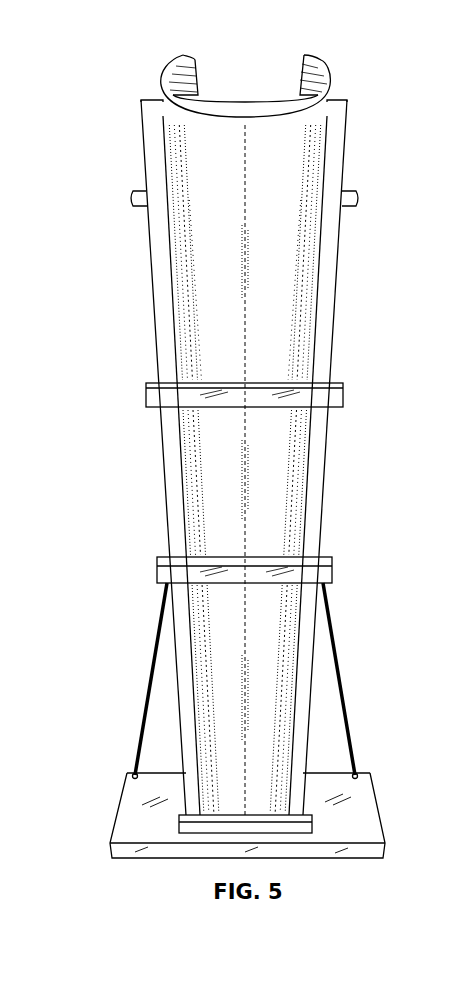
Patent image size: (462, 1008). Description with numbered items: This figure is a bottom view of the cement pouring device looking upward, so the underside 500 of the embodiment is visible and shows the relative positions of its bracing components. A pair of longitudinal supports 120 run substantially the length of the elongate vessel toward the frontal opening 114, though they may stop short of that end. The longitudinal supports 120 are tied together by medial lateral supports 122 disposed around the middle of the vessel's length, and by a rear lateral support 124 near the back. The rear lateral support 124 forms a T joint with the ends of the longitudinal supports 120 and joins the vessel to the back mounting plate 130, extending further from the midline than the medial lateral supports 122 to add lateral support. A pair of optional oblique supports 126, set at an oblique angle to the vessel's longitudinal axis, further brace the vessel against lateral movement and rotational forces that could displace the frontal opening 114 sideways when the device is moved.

The frontal opening 114 is at (245, 88).
The underside 500 is at (230, 159).
The longitudinal supports 120 is at (158, 342).
The medial lateral supports 122 is at (344, 383).
The oblique supports 126 is at (349, 692).
The back mounting plate 130 is at (128, 832).
The rear lateral support 124 is at (313, 826).